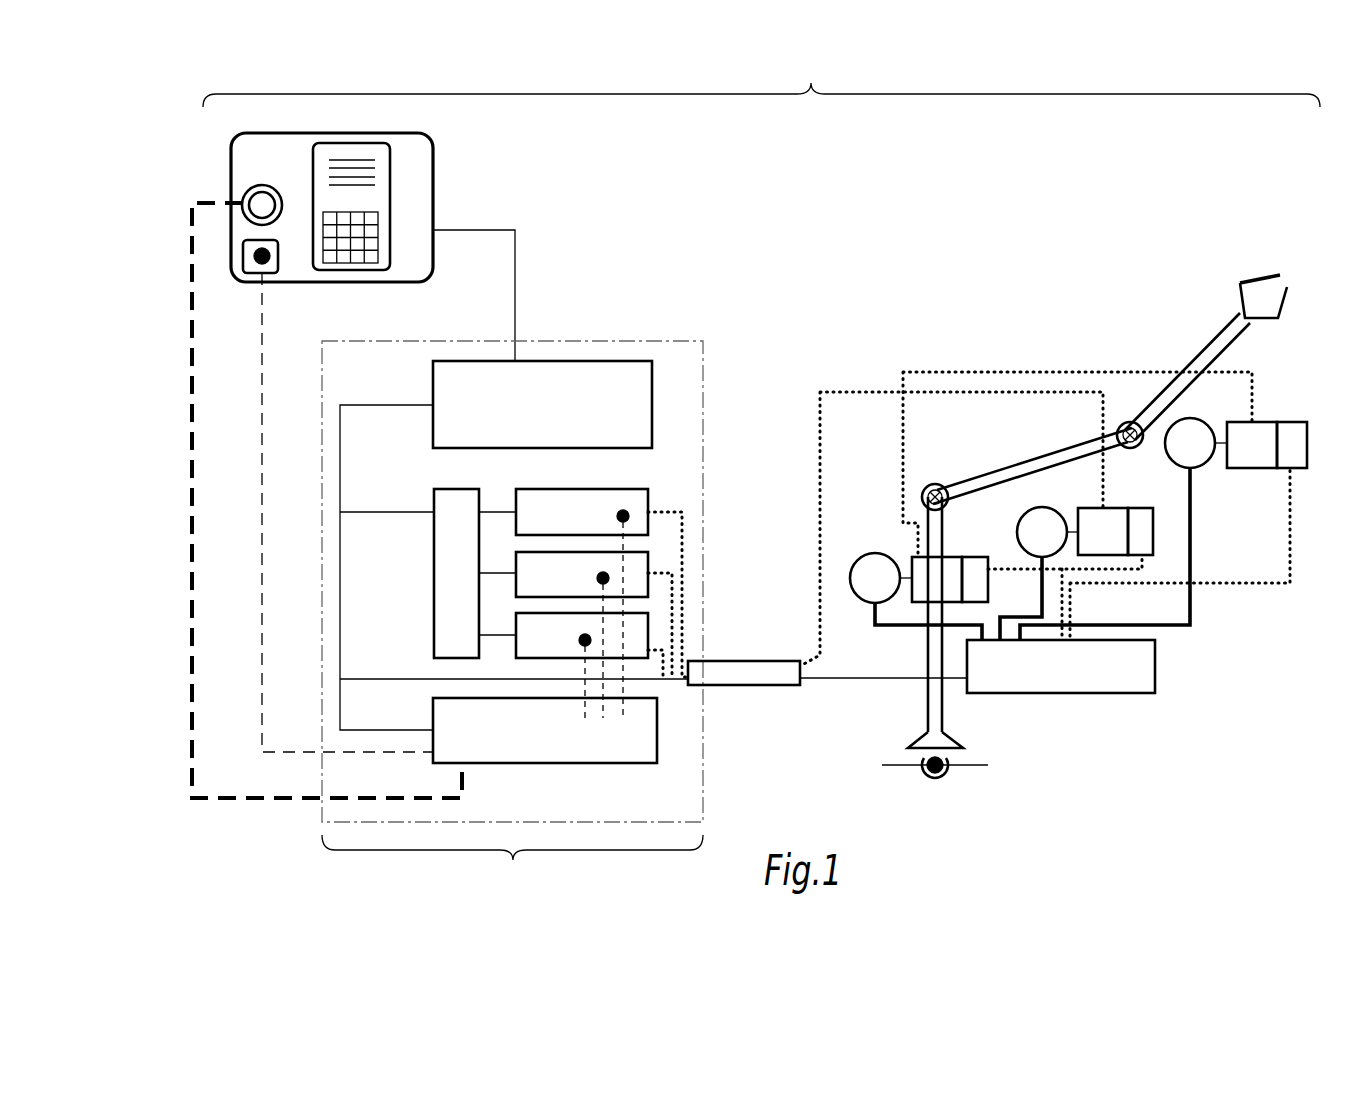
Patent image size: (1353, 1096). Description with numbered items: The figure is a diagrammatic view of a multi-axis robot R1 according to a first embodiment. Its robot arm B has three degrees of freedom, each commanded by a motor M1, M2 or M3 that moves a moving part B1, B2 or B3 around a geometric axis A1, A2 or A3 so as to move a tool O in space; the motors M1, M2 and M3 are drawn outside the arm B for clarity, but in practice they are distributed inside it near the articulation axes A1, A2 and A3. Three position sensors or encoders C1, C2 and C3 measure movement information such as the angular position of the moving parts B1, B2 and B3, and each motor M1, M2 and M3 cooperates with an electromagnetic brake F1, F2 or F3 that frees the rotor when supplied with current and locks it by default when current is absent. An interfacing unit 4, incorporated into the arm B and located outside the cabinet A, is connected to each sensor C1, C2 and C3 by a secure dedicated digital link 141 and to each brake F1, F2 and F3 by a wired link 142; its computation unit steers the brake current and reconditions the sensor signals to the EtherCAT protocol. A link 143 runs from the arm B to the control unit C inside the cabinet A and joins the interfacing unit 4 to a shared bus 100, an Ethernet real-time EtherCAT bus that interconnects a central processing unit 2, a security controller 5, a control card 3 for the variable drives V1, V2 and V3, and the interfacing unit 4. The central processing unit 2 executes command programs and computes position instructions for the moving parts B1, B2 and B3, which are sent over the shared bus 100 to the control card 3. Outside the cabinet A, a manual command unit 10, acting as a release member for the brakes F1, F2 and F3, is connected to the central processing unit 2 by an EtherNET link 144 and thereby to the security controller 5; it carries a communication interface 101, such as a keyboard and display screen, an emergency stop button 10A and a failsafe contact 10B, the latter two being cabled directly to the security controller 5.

The robot R1 is at (761, 80).
The manual command unit 10 is at (445, 180).
The emergency stop button 10A is at (250, 261).
The failsafe contact 10B is at (257, 200).
The communication interface 101 is at (352, 158).
The EtherNET link 144 is at (515, 273).
The cabinet A is at (627, 340).
The shared bus 100 is at (340, 488).
The central processing unit 2 is at (542, 404).
The control card 3 is at (475, 573).
The variable drive V1 is at (602, 603).
The variable drive V2 is at (594, 635).
The variable drive V3 is at (589, 665).
The security controller 5 is at (545, 730).
The control unit C is at (512, 866).
The link 143 is at (845, 679).
The interfacing unit 4 is at (1061, 666).
The secure dedicated digital link 141 is at (1040, 612).
The wired link 142 is at (1010, 568).
The position sensor C1 is at (881, 578).
The position sensor C2 is at (1047, 532).
The position sensor C3 is at (1196, 443).
The motor M1 is at (937, 579).
The motor M2 is at (1103, 531).
The motor M3 is at (1252, 445).
The electromagnetic brake F1 is at (975, 579).
The electromagnetic brake F2 is at (1140, 531).
The electromagnetic brake F3 is at (1292, 445).
The robot arm B is at (1178, 326).
The moving part B1 is at (937, 720).
The moving part B2 is at (1025, 468).
The moving part B3 is at (1223, 343).
The geometric axis A1 is at (948, 771).
The geometric axis A2 is at (928, 487).
The geometric axis A3 is at (1126, 423).
The tool O is at (1260, 279).